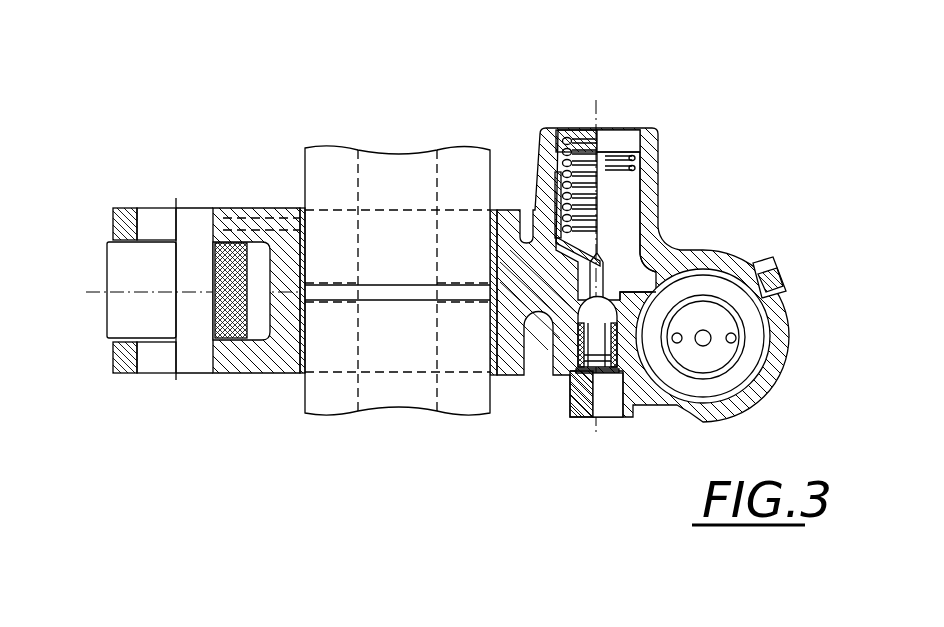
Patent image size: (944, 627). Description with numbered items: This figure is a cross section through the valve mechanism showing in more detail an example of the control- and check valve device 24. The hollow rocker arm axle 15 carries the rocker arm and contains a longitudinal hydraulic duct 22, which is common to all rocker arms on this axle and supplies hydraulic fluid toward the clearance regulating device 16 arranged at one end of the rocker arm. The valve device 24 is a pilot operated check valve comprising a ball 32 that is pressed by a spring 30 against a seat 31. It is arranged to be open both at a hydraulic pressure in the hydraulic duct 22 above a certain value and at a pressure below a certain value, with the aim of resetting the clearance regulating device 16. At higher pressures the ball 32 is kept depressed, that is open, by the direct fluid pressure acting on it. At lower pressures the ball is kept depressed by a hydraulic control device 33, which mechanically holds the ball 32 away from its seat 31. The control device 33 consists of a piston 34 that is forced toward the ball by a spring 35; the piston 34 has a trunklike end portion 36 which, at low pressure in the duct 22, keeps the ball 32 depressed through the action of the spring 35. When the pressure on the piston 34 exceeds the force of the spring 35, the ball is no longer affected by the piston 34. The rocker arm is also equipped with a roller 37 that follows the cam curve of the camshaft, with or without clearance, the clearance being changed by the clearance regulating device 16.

The rocker arm axle 15 is at (463, 170).
The clearance regulating device 16 is at (773, 323).
The hydraulic duct 22 is at (397, 170).
The control- and check valve device 24 is at (670, 175).
The spring 30 is at (573, 363).
The seat 31 is at (567, 347).
The ball 32 is at (632, 275).
The hydraulic control device 33 is at (578, 121).
The piston 34 is at (620, 190).
The spring 35 is at (620, 152).
The trunklike end portion 36 is at (612, 300).
The roller 37 is at (107, 266).